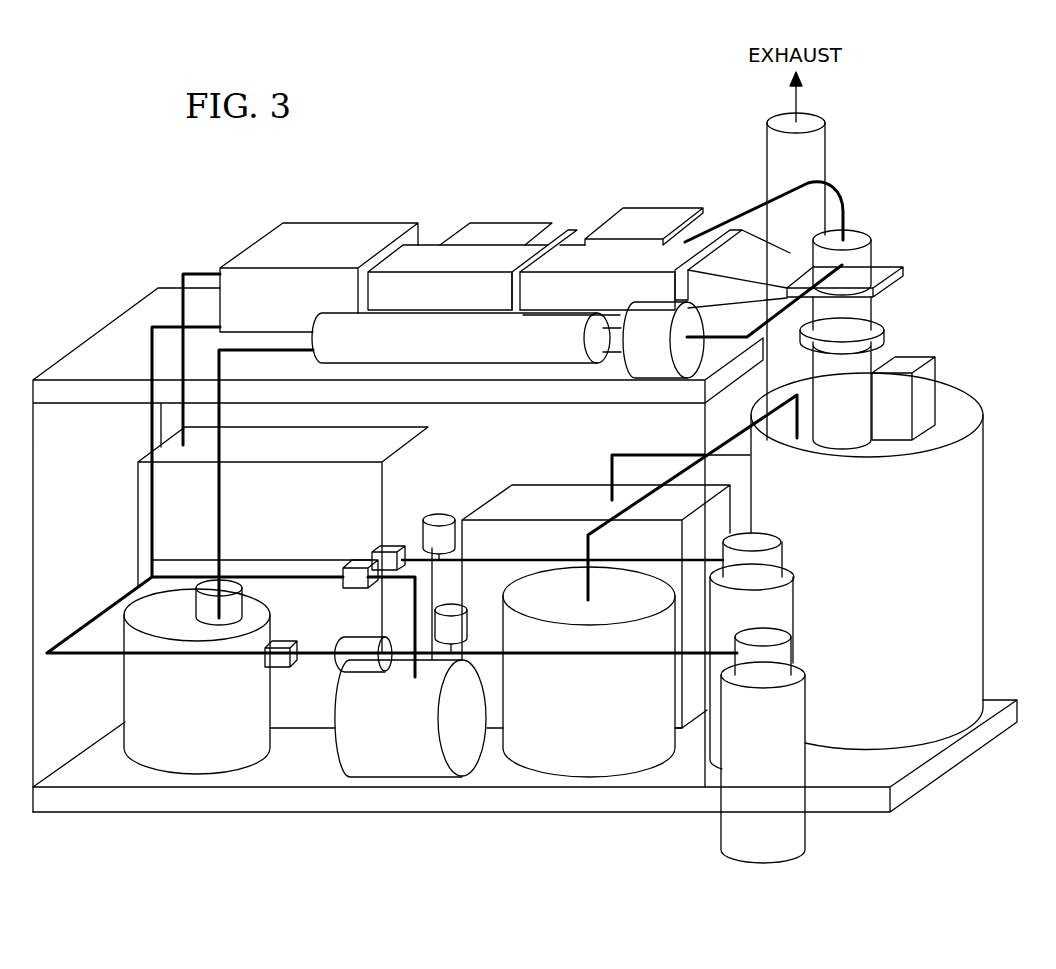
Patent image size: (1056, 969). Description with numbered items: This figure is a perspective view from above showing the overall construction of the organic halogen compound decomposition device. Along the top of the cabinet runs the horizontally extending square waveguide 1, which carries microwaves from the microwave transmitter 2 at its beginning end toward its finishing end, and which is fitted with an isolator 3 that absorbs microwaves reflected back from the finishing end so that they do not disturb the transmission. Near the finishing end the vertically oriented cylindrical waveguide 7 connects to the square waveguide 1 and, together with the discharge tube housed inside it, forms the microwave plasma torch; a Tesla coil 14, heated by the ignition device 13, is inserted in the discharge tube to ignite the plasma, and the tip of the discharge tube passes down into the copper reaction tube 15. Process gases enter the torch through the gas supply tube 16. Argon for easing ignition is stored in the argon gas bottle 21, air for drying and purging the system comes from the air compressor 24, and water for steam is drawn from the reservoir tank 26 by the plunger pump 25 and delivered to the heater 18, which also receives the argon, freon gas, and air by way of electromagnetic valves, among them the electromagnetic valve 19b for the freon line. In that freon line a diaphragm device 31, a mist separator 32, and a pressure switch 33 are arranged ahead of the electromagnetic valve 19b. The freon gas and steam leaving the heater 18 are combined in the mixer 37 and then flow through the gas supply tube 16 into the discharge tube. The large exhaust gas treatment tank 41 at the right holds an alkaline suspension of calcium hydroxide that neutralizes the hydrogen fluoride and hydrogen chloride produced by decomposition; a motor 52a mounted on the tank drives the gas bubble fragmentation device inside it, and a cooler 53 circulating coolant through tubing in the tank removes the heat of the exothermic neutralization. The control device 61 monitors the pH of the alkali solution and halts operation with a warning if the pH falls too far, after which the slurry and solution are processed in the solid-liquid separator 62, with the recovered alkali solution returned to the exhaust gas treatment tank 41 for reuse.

The square waveguide 1 is at (428, 250).
The microwave transmitter 2 is at (368, 232).
The isolator 3 is at (527, 225).
The cylindrical waveguide 7 is at (863, 305).
The ignition device 13 is at (653, 215).
The Tesla coil 14 is at (843, 207).
The copper reaction tube 15 is at (860, 410).
The gas supply tube 16 is at (843, 266).
The heater 18 is at (456, 352).
The electromagnetic valve 19b is at (280, 650).
The argon gas bottle 21 is at (782, 613).
The air compressor 24 is at (370, 762).
The plunger pump 25 is at (240, 608).
The reservoir tank 26 is at (130, 710).
The diaphragm device 31 is at (795, 853).
The mist separator 32 is at (348, 658).
The pressure switch 33 is at (465, 620).
The mixer 37 is at (653, 368).
The exhaust gas treatment tank 41 is at (970, 548).
The motor 52a is at (930, 392).
The cooler 53 is at (537, 495).
The control device 61 is at (170, 514).
The solid-liquid separator 62 is at (585, 760).